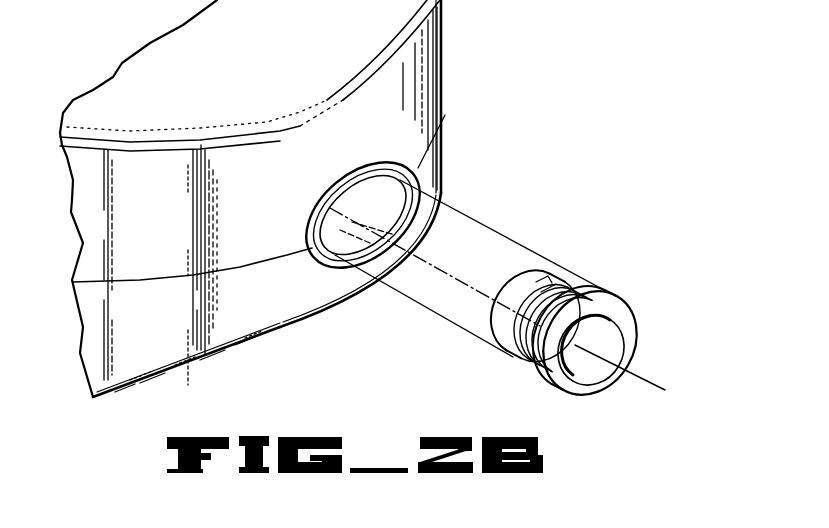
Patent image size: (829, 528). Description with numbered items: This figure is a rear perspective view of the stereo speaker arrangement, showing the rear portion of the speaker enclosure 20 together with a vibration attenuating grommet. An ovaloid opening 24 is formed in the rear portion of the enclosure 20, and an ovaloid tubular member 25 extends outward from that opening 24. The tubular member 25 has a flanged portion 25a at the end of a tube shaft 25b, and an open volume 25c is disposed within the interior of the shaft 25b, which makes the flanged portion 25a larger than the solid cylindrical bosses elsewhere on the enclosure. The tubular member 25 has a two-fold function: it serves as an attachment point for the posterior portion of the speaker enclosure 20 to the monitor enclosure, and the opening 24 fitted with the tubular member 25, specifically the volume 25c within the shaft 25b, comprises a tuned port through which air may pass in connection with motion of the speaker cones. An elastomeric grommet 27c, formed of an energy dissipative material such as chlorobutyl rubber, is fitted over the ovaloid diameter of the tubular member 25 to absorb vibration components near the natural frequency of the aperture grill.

The enclosure 20 is at (283, 297).
The ovaloid opening 24 is at (370, 198).
The ovaloid tubular member 25 is at (584, 321).
The flanged portion 25a is at (627, 352).
The tube shaft 25b is at (530, 300).
The open volume 25c is at (588, 363).
The elastomeric grommet 27c is at (513, 357).